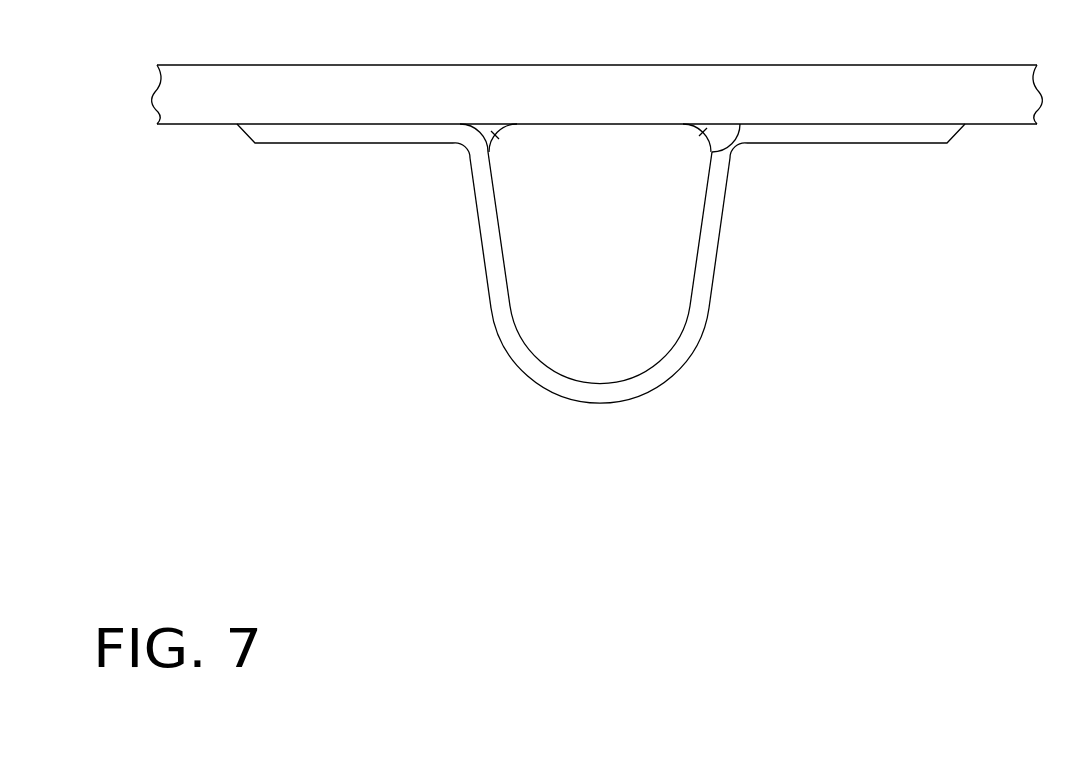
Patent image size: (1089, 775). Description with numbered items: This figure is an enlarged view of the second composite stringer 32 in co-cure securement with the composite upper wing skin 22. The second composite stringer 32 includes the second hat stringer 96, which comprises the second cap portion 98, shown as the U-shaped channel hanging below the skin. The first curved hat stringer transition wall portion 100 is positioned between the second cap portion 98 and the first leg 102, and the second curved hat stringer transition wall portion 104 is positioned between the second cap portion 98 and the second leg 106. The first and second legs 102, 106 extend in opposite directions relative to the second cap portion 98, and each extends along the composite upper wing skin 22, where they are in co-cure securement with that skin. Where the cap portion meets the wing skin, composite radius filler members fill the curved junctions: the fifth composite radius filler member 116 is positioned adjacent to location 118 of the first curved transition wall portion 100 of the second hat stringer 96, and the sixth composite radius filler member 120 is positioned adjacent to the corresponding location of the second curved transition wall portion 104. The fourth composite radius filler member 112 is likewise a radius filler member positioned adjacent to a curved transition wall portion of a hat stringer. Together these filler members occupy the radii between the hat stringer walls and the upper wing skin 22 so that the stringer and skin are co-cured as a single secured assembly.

The composite upper wing skin 22 is at (750, 88).
The second composite stringer 32 is at (613, 241).
The second hat stringer 96 is at (700, 359).
The second cap portion 98 is at (480, 277).
The first curved hat stringer transition wall portion 100 is at (459, 149).
The first leg 102 is at (353, 143).
The second curved hat stringer transition wall portion 104 is at (741, 149).
The second leg 106 is at (868, 143).
The fourth composite radius filler member 112 is at (707, 123).
The fifth composite radius filler member 116 is at (497, 138).
The location 118 is at (483, 123).
The sixth composite radius filler member 120 is at (703, 137).